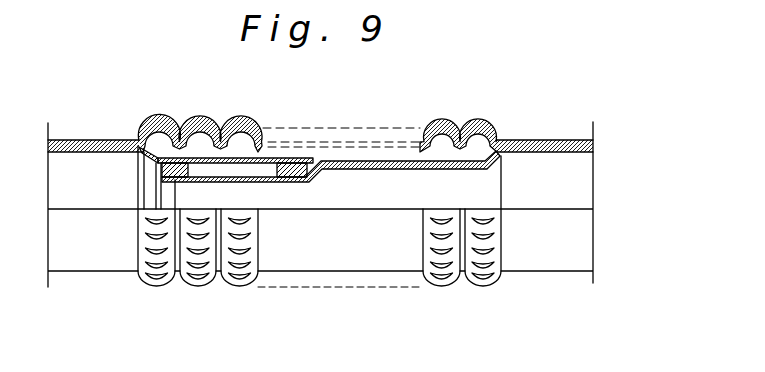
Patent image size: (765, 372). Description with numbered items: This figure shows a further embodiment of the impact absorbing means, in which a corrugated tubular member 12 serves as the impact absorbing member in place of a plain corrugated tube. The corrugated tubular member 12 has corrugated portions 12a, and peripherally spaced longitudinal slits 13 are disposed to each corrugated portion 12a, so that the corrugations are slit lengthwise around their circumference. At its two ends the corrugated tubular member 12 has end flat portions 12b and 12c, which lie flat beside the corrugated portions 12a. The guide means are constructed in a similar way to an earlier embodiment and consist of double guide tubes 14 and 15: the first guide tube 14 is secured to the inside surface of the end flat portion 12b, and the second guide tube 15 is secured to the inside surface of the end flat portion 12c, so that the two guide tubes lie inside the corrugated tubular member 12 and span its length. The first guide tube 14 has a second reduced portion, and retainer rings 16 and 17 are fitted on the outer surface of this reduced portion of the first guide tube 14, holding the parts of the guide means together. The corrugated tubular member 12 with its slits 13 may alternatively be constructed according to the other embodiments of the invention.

The corrugated tubular member 12 is at (110, 137).
The corrugated portion 12a is at (156, 128).
The end flat portion 12b is at (540, 140).
The end flat portion 12c is at (82, 138).
The longitudinal slits 13 is at (155, 281).
The first guide tube 14 is at (417, 170).
The second guide tube 15 is at (264, 150).
The retainer ring 16 is at (291, 178).
The retainer ring 17 is at (156, 174).